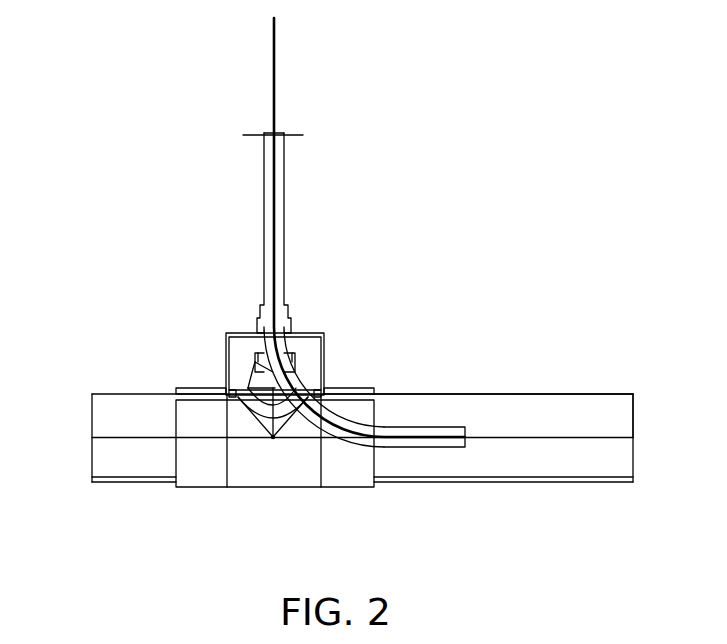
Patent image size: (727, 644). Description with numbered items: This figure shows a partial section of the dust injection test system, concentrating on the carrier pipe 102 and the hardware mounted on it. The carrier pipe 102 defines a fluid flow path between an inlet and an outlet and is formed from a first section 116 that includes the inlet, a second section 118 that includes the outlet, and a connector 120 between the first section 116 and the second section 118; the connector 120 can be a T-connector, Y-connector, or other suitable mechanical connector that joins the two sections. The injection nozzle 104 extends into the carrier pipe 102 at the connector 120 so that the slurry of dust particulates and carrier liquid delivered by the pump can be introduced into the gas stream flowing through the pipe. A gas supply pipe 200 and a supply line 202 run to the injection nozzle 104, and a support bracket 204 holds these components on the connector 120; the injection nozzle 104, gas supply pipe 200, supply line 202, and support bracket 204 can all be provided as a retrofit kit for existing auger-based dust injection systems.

The carrier pipe 102 is at (361, 299).
The injection nozzle 104 is at (467, 432).
The first section 116 is at (97, 393).
The second section 118 is at (603, 400).
The connector 120 is at (218, 392).
The gas supply pipe 200 is at (416, 290).
The supply line 202 is at (275, 100).
The support bracket 204 is at (310, 360).